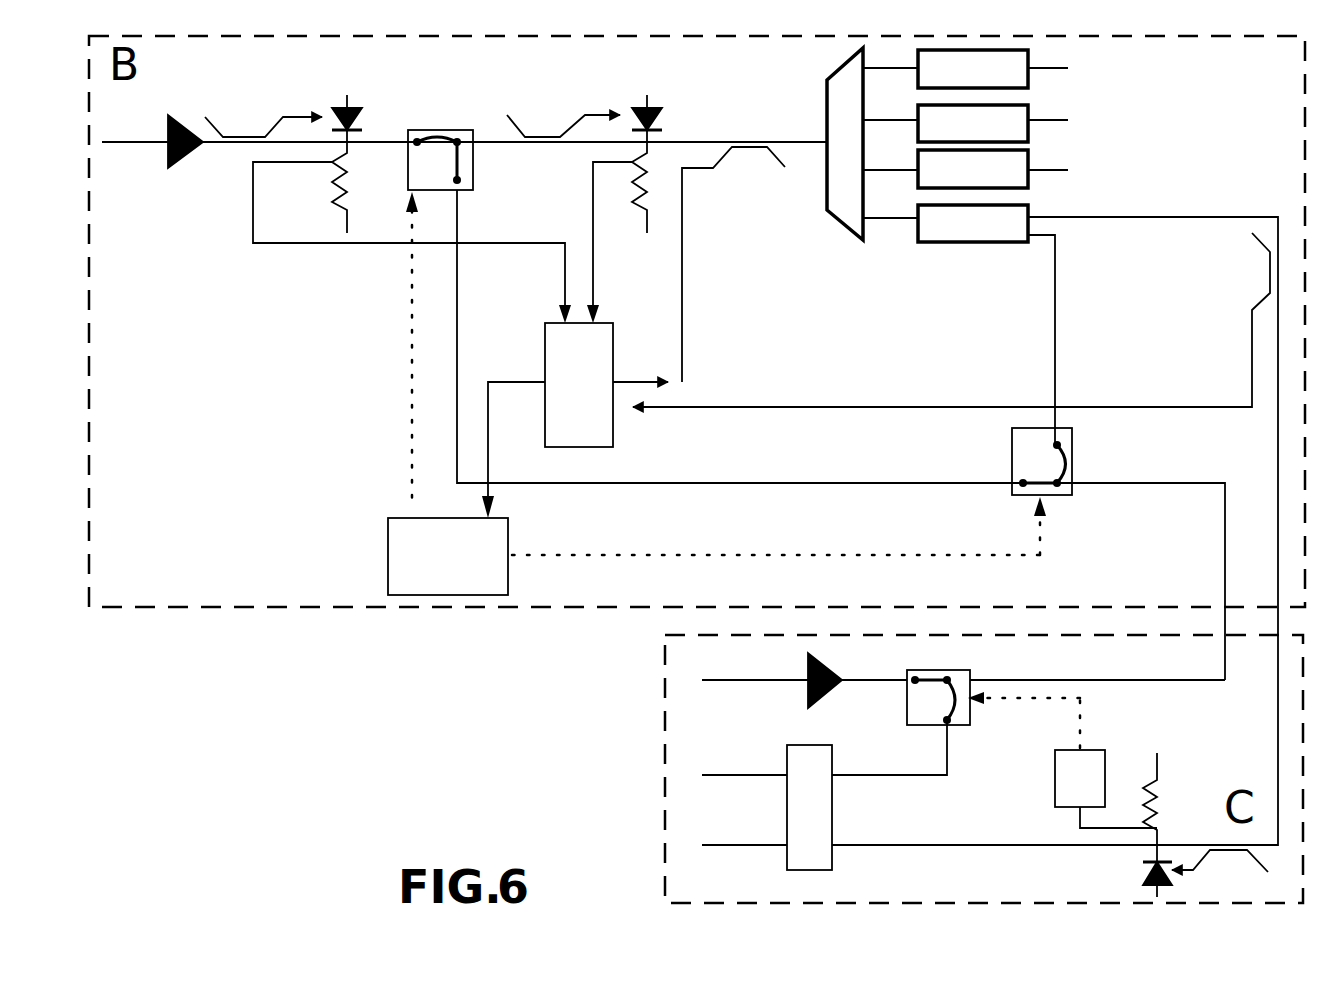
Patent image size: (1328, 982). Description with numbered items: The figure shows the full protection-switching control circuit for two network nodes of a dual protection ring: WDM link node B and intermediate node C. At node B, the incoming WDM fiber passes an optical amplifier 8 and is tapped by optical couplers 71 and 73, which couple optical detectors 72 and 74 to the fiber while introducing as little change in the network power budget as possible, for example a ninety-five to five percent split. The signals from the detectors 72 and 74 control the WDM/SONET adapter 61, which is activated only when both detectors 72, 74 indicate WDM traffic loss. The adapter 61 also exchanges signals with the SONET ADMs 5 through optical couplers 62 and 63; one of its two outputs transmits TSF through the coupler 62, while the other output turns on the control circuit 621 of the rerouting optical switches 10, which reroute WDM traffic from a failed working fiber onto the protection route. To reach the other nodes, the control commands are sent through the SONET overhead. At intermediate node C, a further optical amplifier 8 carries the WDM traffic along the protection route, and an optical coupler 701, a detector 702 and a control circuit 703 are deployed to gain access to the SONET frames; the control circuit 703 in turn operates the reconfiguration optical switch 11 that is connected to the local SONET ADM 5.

The SONET ADM 5 is at (979, 81).
The optical amplifier 8 is at (188, 158).
The rerouting optical switch 10 is at (447, 176).
The reconfiguration optical switch 11 is at (951, 712).
The WDM/SONET adapter 61 is at (592, 399).
The optical coupler 62 is at (740, 148).
The optical coupler 63 is at (1268, 262).
The optical coupler 71 is at (247, 137).
The optical detector 72 is at (352, 108).
The optical coupler 73 is at (560, 137).
The optical detector 74 is at (660, 118).
The control circuit 621 is at (466, 573).
The optical coupler 701 is at (1240, 851).
The detector 702 is at (1145, 876).
The control circuit 703 is at (1098, 790).